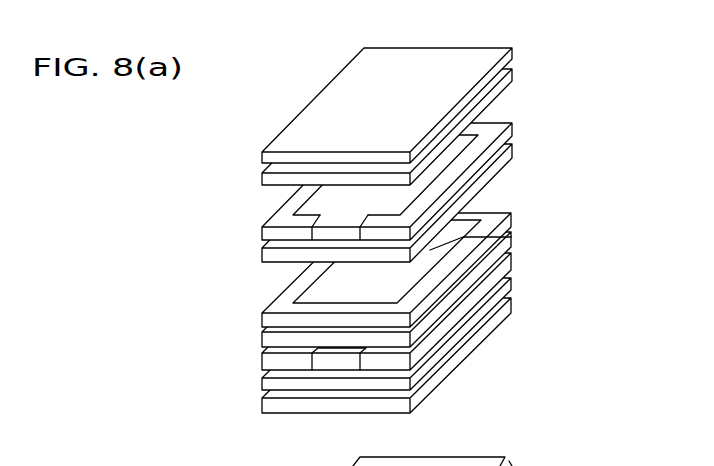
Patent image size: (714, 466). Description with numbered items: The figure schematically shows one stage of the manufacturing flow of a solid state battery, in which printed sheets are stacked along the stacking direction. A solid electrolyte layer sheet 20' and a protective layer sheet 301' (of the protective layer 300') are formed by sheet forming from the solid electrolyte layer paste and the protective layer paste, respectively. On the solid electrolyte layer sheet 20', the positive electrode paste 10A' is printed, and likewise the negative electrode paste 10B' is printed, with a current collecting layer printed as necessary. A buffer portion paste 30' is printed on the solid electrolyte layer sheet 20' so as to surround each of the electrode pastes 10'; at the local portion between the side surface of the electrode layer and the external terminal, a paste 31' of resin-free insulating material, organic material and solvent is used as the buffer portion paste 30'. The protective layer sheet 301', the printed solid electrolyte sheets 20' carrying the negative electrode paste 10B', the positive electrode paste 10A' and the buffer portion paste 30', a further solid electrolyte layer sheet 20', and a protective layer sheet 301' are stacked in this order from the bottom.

The protective layer sheet 301' is at (472, 188).
The current collector layer 300' is at (472, 188).
The solid electrolyte layer sheet 20' is at (388, 245).
The paste 31' is at (457, 257).
The buffer portion paste 30' is at (457, 181).
The electrode paste 10' is at (330, 361).
The positive electrode paste 10A' is at (524, 250).
The negative electrode paste 10B' is at (259, 305).